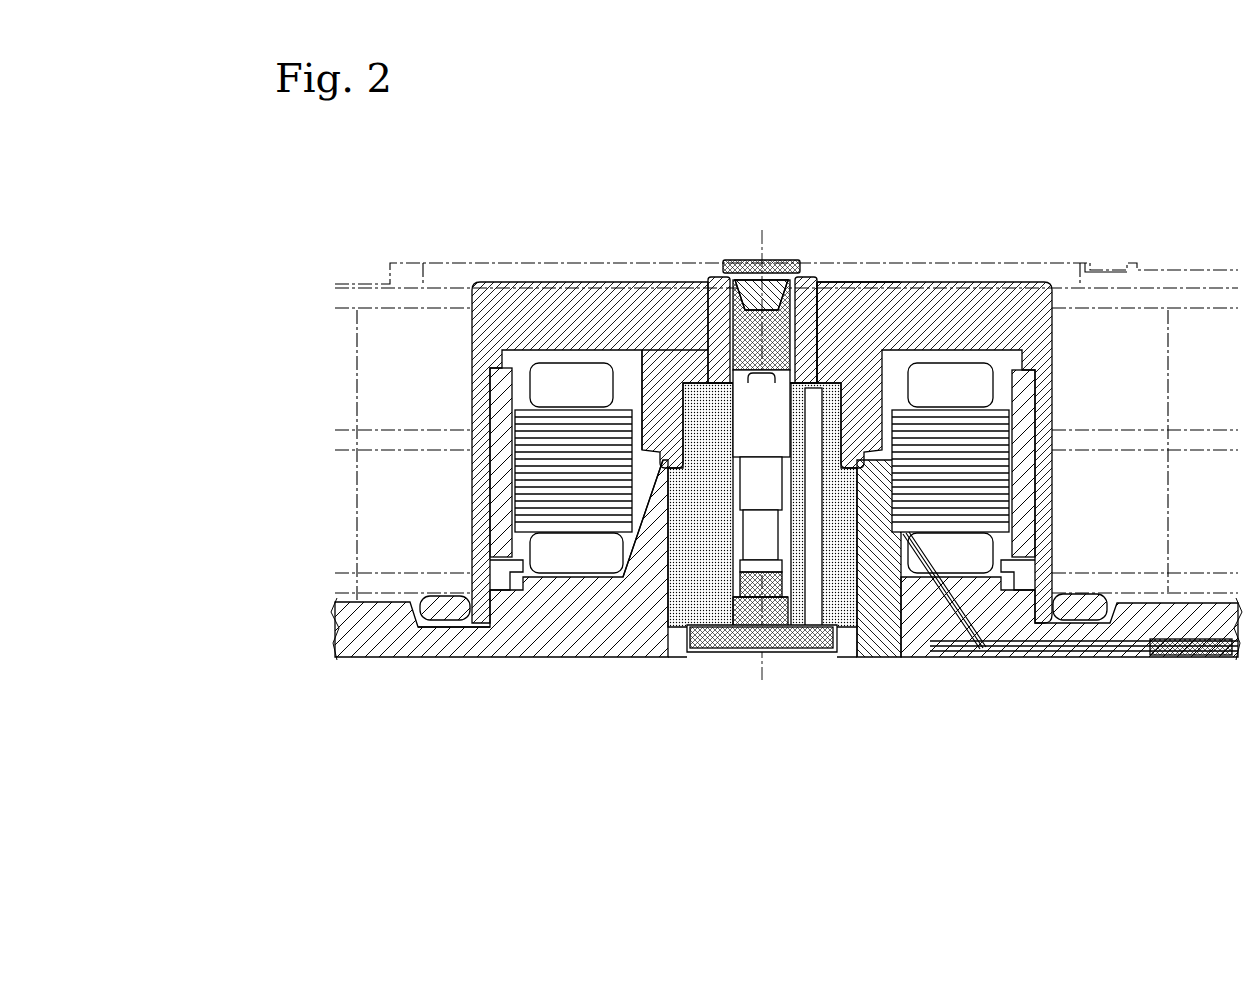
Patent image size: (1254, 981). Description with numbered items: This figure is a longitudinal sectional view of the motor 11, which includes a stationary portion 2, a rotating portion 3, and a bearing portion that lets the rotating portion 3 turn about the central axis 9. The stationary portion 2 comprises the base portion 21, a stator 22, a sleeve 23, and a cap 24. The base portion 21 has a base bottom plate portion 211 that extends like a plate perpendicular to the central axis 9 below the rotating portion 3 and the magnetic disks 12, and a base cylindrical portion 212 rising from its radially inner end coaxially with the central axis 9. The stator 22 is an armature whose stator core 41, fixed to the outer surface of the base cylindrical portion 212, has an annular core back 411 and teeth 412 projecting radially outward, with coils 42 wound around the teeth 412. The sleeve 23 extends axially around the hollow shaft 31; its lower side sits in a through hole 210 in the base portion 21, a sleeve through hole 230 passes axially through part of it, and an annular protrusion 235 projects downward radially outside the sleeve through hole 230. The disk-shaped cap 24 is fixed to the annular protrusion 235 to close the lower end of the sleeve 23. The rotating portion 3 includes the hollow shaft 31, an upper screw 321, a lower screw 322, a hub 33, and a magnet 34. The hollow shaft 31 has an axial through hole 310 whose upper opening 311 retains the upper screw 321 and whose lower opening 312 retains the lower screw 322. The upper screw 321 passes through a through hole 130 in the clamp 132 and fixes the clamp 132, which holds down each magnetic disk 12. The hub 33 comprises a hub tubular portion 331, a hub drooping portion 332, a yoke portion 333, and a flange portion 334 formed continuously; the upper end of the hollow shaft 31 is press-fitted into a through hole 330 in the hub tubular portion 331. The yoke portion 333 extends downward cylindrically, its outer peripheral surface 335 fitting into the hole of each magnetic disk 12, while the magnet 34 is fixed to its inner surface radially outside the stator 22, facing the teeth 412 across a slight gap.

The stationary portion 2 is at (786, 615).
The base portion 21 is at (540, 615).
The base bottom plate portion 211 is at (537, 607).
The base cylindrical portion 212 is at (645, 520).
The through hole 210 is at (697, 658).
The stator 22 is at (876, 585).
The sleeve 23 is at (682, 600).
The sleeve through hole 230 is at (858, 650).
The annular protrusion 235 is at (845, 607).
The cap 24 is at (762, 679).
The rotating portion 3 is at (766, 462).
The hollow shaft 31 is at (797, 461).
The through hole 310 is at (883, 300).
The upper opening 311 is at (772, 415).
The lower opening 312 is at (745, 640).
The upper screw 321 is at (835, 330).
The lower screw 322 is at (770, 640).
The hub 33 is at (755, 372).
The hub tubular portion 331 is at (657, 269).
The hub drooping portion 332 is at (640, 400).
The yoke portion 333 is at (503, 450).
The flange portion 334 is at (490, 495).
The through hole 330 is at (740, 333).
The outer peripheral surface 335 is at (1052, 523).
The magnet 34 is at (440, 607).
The stator core 41 is at (762, 566).
The core back 411 is at (933, 490).
The teeth 412 is at (963, 553).
The coils 42 is at (1005, 645).
The central axis 9 is at (758, 272).
The motor 11 is at (786, 371).
The magnetic disks 12 is at (786, 394).
The through hole 130 is at (768, 300).
The clamp 132 is at (1090, 267).